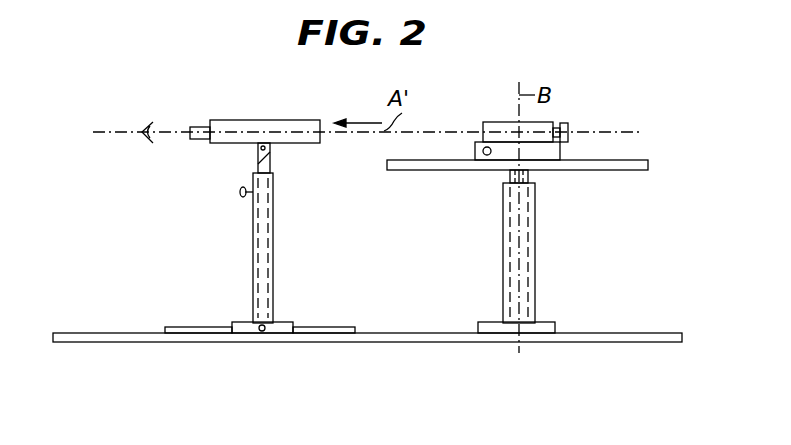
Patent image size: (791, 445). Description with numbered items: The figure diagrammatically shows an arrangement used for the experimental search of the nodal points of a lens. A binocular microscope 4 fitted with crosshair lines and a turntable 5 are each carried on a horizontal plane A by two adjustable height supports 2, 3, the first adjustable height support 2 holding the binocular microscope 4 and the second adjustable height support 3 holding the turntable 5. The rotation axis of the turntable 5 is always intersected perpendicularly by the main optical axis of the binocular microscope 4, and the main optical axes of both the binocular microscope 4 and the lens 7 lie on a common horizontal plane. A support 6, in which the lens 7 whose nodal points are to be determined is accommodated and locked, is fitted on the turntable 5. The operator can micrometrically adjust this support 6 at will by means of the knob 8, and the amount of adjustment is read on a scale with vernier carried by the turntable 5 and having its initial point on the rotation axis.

The adjustable height support 2 is at (274, 294).
The adjustable height support 3 is at (536, 275).
The binocular microscope 4 is at (305, 139).
The turntable 5 is at (624, 172).
The support 6 is at (562, 150).
The lens 7 is at (542, 123).
The knob 8 is at (483, 151).
The horizontal plane A is at (682, 333).